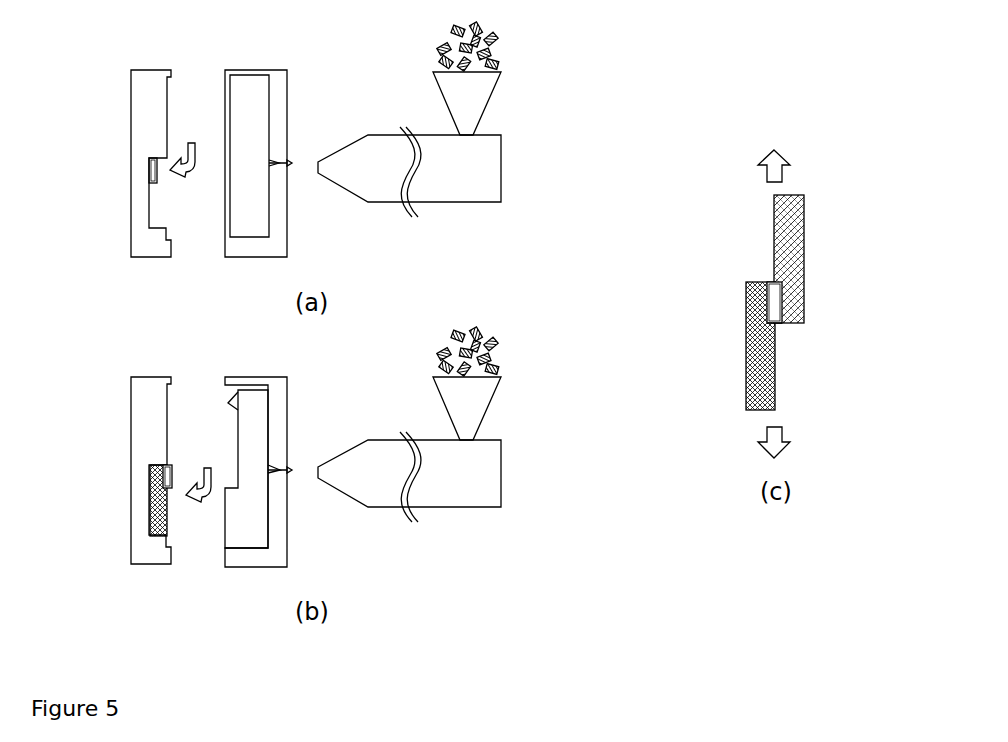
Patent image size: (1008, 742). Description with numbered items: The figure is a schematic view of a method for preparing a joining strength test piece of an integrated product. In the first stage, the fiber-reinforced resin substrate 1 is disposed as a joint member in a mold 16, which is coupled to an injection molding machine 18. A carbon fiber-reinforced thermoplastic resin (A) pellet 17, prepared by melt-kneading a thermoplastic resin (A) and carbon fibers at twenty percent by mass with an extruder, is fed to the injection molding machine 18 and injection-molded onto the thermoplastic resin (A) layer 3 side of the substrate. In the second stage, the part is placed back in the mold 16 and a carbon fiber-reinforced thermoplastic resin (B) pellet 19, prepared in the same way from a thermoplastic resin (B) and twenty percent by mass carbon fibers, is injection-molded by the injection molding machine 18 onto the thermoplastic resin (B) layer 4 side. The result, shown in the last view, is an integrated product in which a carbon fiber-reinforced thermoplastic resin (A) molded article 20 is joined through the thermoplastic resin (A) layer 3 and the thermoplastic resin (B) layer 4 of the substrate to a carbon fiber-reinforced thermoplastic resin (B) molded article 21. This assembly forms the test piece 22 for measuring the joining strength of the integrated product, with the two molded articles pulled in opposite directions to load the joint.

The fiber-reinforced resin substrate 1 is at (148, 158).
The thermoplastic resin (A) layer 3 is at (772, 281).
The thermoplastic resin (B) layer 4 is at (778, 323).
The mold 16 is at (276, 97).
The carbon fiber-reinforced thermoplastic resin (A) pellet 17 is at (502, 78).
The injection molding machine 18 is at (419, 360).
The carbon fiber-reinforced thermoplastic resin (B) pellet 19 is at (502, 383).
The carbon fiber-reinforced thermoplastic resin (A) molded article 20 is at (746, 367).
The carbon fiber-reinforced thermoplastic resin (B) molded article 21 is at (807, 232).
The test piece for measuring joining strength of integrated product 22 is at (831, 391).